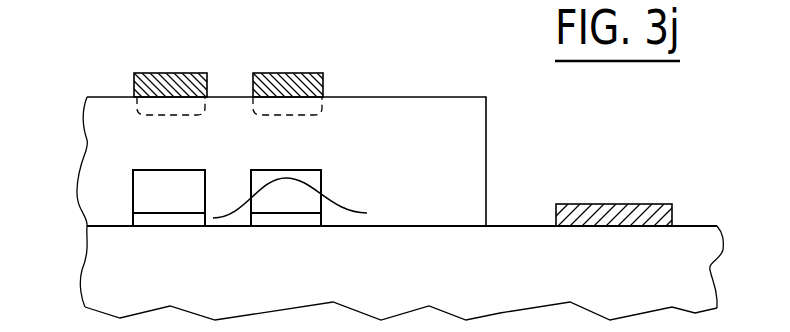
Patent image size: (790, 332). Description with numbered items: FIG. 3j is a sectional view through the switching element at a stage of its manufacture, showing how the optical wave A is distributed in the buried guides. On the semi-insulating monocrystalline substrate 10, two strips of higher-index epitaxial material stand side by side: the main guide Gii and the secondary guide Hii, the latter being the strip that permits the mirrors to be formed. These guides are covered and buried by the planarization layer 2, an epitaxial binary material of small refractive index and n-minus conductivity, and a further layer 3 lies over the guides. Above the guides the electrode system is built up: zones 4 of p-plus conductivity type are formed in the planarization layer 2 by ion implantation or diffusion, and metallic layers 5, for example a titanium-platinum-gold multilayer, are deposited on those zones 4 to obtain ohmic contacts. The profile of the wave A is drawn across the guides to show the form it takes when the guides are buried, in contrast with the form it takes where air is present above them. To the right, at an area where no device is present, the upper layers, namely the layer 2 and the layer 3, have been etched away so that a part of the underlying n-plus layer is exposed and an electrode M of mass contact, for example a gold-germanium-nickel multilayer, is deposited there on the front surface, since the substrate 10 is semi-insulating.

The monocrystalline substrate 10 is at (105, 273).
The planarization layer 2 is at (100, 165).
The layer 3 is at (150, 198).
The zones of P+ conductivity type 4 is at (147, 104).
The metallic layers 5 is at (150, 82).
The main guide Gii is at (186, 69).
The secondary guide Hii is at (282, 66).
The wave A is at (334, 202).
The electrode of mass contact M is at (640, 202).